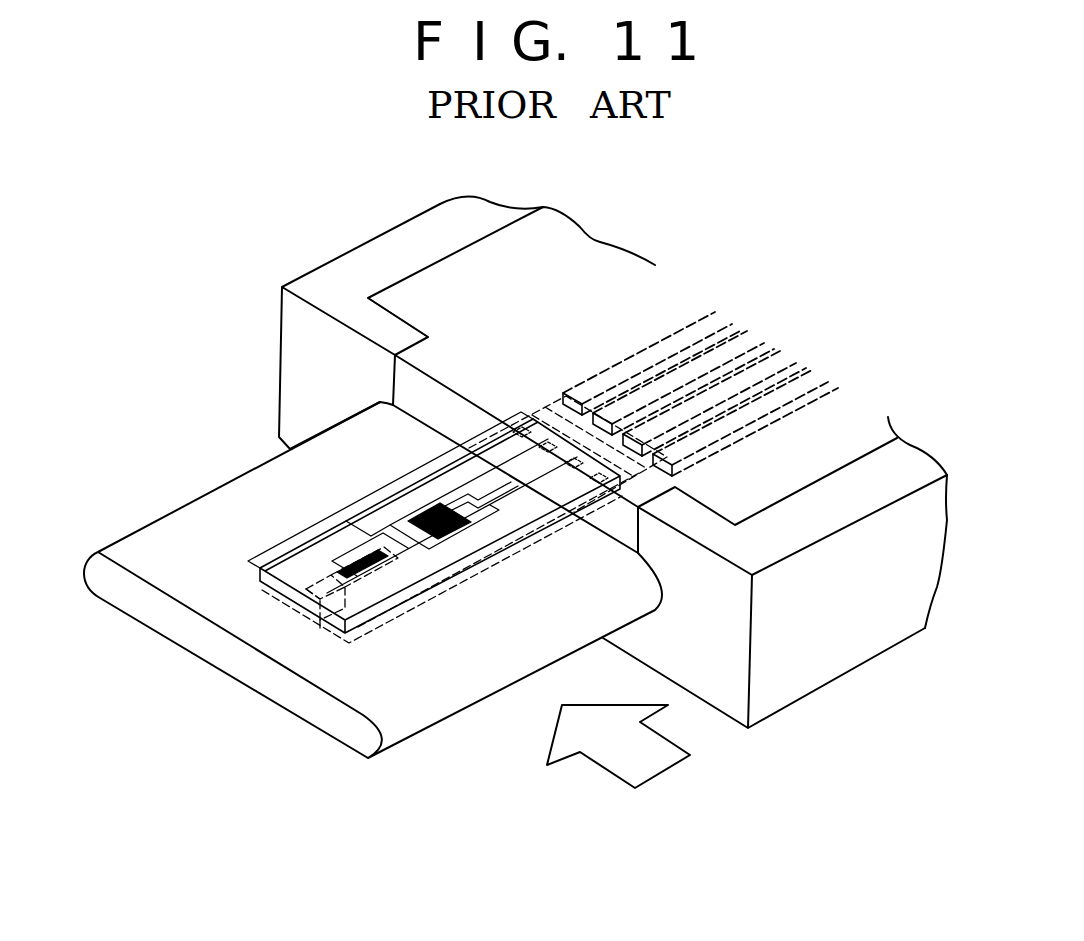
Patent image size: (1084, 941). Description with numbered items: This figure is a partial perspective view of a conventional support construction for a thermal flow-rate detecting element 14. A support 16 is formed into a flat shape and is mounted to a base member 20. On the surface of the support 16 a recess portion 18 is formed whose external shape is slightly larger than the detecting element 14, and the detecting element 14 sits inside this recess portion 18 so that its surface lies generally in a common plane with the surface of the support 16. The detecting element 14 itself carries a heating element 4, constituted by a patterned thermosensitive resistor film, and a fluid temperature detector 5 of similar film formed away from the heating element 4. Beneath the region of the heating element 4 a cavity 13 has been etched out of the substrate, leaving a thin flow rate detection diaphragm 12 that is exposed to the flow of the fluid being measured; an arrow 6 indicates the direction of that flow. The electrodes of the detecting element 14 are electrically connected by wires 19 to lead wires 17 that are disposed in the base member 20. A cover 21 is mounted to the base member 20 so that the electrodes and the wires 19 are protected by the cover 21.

The heating element 4 is at (347, 563).
The fluid temperature detector 5 is at (432, 508).
The arrow 6 is at (655, 743).
The flow rate detection diaphragm 12 is at (343, 572).
The cavity 13 is at (358, 595).
The detecting element 14 is at (293, 562).
The support 16 is at (198, 638).
The lead wires 17 is at (625, 367).
The recess portion 18 is at (262, 565).
The wires 19 is at (543, 420).
The base member 20 is at (310, 285).
The cover 21 is at (418, 290).